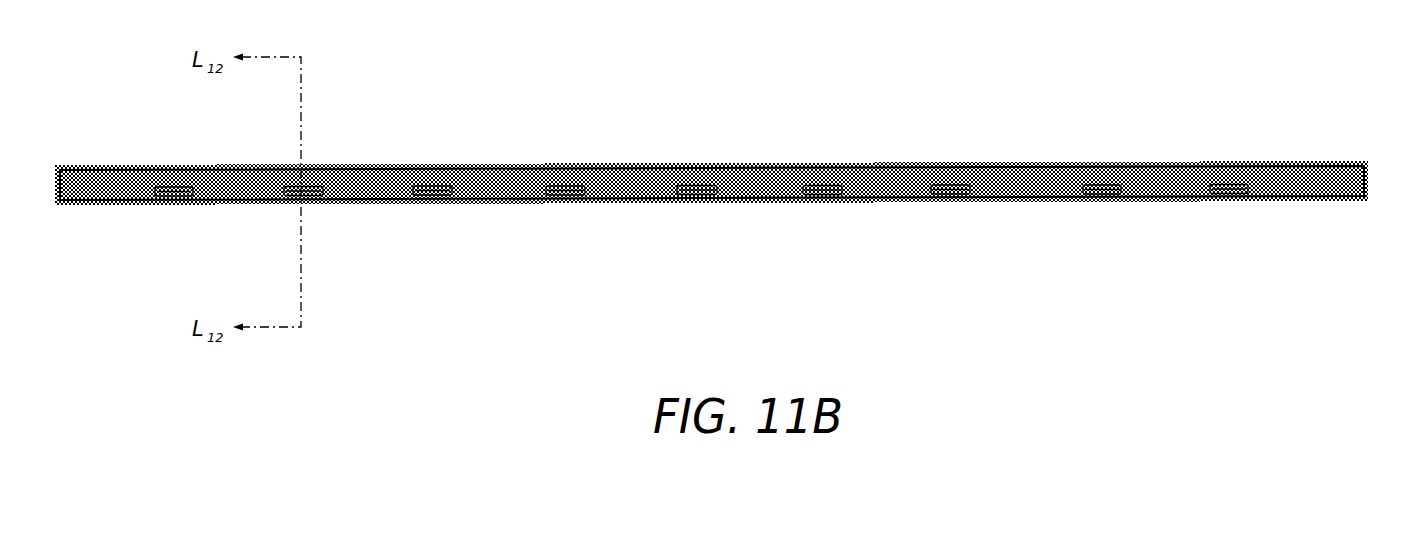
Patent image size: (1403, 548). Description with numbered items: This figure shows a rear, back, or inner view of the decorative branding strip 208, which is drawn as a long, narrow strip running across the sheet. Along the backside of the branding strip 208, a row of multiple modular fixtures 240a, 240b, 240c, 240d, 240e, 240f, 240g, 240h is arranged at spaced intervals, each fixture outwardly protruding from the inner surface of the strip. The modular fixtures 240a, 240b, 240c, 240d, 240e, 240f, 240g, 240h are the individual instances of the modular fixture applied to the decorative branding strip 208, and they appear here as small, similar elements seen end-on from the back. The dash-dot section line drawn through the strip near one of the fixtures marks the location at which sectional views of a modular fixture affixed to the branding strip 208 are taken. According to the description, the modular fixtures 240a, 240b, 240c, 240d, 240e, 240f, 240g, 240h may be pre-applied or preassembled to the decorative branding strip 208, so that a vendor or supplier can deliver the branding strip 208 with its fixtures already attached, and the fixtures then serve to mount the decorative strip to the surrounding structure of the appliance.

The branding strip 208 is at (1335, 203).
The modular fixture 240a is at (168, 206).
The modular fixture 240b is at (306, 190).
The modular fixture 240c is at (433, 202).
The modular fixture 240d is at (562, 204).
The modular fixture 240e is at (820, 184).
The modular fixture 240f is at (952, 202).
The modular fixture 240g is at (1102, 202).
The modular fixture 240h is at (1225, 183).